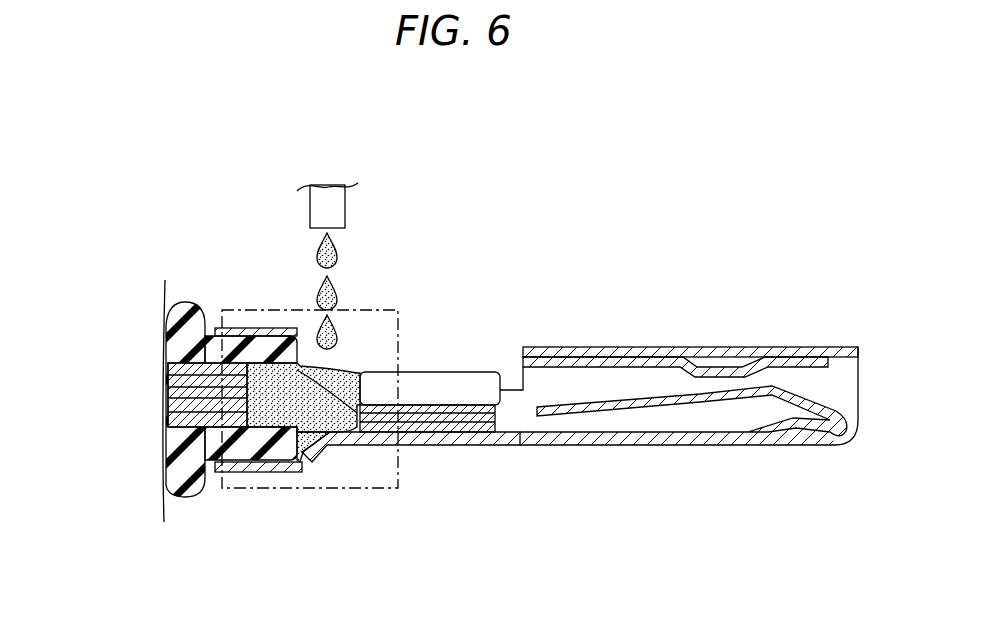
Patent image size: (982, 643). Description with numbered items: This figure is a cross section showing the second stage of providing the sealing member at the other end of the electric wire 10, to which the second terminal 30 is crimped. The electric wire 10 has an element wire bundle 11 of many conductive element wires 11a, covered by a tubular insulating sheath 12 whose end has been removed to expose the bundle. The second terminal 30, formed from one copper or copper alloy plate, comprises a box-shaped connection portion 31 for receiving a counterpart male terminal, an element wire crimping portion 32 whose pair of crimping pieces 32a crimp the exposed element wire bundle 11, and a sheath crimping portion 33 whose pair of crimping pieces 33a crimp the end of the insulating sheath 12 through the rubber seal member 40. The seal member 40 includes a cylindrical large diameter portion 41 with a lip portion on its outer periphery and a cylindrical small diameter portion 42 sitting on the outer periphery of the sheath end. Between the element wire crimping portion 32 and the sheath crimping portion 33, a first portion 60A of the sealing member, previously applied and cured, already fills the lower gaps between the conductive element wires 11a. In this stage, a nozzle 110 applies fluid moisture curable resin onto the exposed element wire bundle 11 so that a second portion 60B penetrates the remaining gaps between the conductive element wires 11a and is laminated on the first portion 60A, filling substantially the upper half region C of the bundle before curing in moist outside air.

The electric wire 10 is at (113, 401).
The insulating sheath 12 is at (164, 401).
The element wire bundle 11 is at (170, 397).
The conductive element wires 11a is at (315, 362).
The second terminal 30 is at (580, 397).
The connection portion 31 is at (688, 447).
The element wire crimping portion 32 is at (440, 446).
The crimping pieces 32a is at (462, 385).
The sheath crimping portion 33 is at (258, 473).
The crimping pieces 33a is at (238, 333).
The seal member 40 is at (195, 331).
The large diameter portion 41 is at (176, 308).
The small diameter portion 42 is at (233, 343).
The first portion 60A is at (312, 458).
The second portion 60B is at (345, 360).
The nozzle 110 is at (350, 210).
The coating region C is at (375, 490).